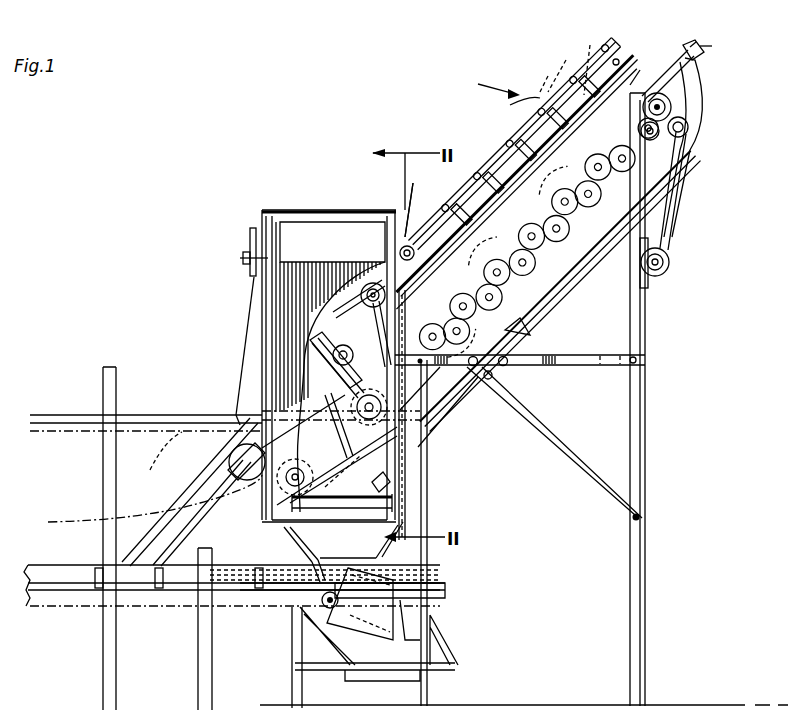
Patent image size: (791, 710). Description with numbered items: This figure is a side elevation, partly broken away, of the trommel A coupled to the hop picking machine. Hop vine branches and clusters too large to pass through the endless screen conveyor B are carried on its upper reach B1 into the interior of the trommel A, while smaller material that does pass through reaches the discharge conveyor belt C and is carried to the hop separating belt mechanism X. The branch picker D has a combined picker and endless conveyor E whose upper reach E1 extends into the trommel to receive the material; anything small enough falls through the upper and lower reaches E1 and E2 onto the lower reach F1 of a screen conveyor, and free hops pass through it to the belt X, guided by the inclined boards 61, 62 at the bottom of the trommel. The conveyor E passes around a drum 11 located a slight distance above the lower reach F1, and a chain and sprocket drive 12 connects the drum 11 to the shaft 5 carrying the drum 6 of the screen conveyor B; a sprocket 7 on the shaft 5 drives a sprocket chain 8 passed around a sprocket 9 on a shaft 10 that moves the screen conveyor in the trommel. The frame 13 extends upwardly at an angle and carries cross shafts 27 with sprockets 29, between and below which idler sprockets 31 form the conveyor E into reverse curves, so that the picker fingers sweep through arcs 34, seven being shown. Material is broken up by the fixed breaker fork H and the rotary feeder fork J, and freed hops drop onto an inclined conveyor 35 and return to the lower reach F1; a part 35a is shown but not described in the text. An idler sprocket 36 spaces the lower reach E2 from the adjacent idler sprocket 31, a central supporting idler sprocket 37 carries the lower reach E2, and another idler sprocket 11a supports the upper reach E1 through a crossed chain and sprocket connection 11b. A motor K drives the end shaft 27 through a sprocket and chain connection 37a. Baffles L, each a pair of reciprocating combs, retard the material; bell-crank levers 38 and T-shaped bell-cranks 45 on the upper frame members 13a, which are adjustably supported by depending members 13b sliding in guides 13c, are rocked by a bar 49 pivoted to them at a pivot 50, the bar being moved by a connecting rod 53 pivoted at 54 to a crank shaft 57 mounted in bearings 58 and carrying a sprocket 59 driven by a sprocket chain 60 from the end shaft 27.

The shaft 5 is at (248, 470).
The drum 6 is at (228, 453).
The sprocket 7 is at (243, 425).
The sprocket chain 8 is at (247, 345).
The sprocket 9 is at (250, 236).
The shaft 10 is at (243, 262).
The drum 11 is at (316, 556).
The idler sprocket 11a is at (365, 422).
The crossed chain and sprocket connection 11b is at (439, 407).
The chain and sprocket drive 12 is at (293, 465).
The frame 13 is at (730, 52).
The upper frame members 13a is at (638, 66).
The depending members 13b is at (676, 36).
The guides 13c is at (711, 40).
The cross shafts 27 is at (545, 242).
The sprockets 29 is at (495, 272).
The idler sprockets 31 is at (565, 226).
The arcs 34 is at (508, 248).
The inclined conveyor 35 is at (590, 278).
The arm 35a is at (695, 64).
The idler sprocket 36 is at (690, 126).
The supporting idler sprocket 37 is at (525, 322).
The sprocket and chain connection 37a is at (672, 220).
The bell-crank lever 38 is at (385, 262).
The T-shaped bell-crank 45 is at (533, 119).
The bar 49 is at (458, 187).
The pivot 50 is at (420, 201).
The connecting rod 53 is at (522, 95).
The pivot 54 is at (500, 152).
The crank shaft 57 is at (559, 66).
The bearings 58 is at (511, 107).
The sprocket 59 is at (543, 77).
The sprocket chain 60 is at (586, 59).
The inclined board 61 is at (288, 540).
The inclined board 62 is at (398, 540).
The trommel A is at (368, 208).
The endless screen conveyor B is at (78, 438).
The upper reach B1 is at (156, 451).
The discharge conveyor belt C is at (275, 612).
The branch picker D is at (486, 83).
The combined picker and endless conveyor E is at (442, 405).
The upper reach E1 is at (352, 418).
The lower reach E2 is at (712, 136).
The lower reach F1 is at (368, 525).
The fixed breaker fork H is at (334, 352).
The rotary feeder fork J is at (335, 290).
The motor K is at (672, 256).
The baffles L is at (572, 145).
The hop separating belt mechanism X is at (420, 600).